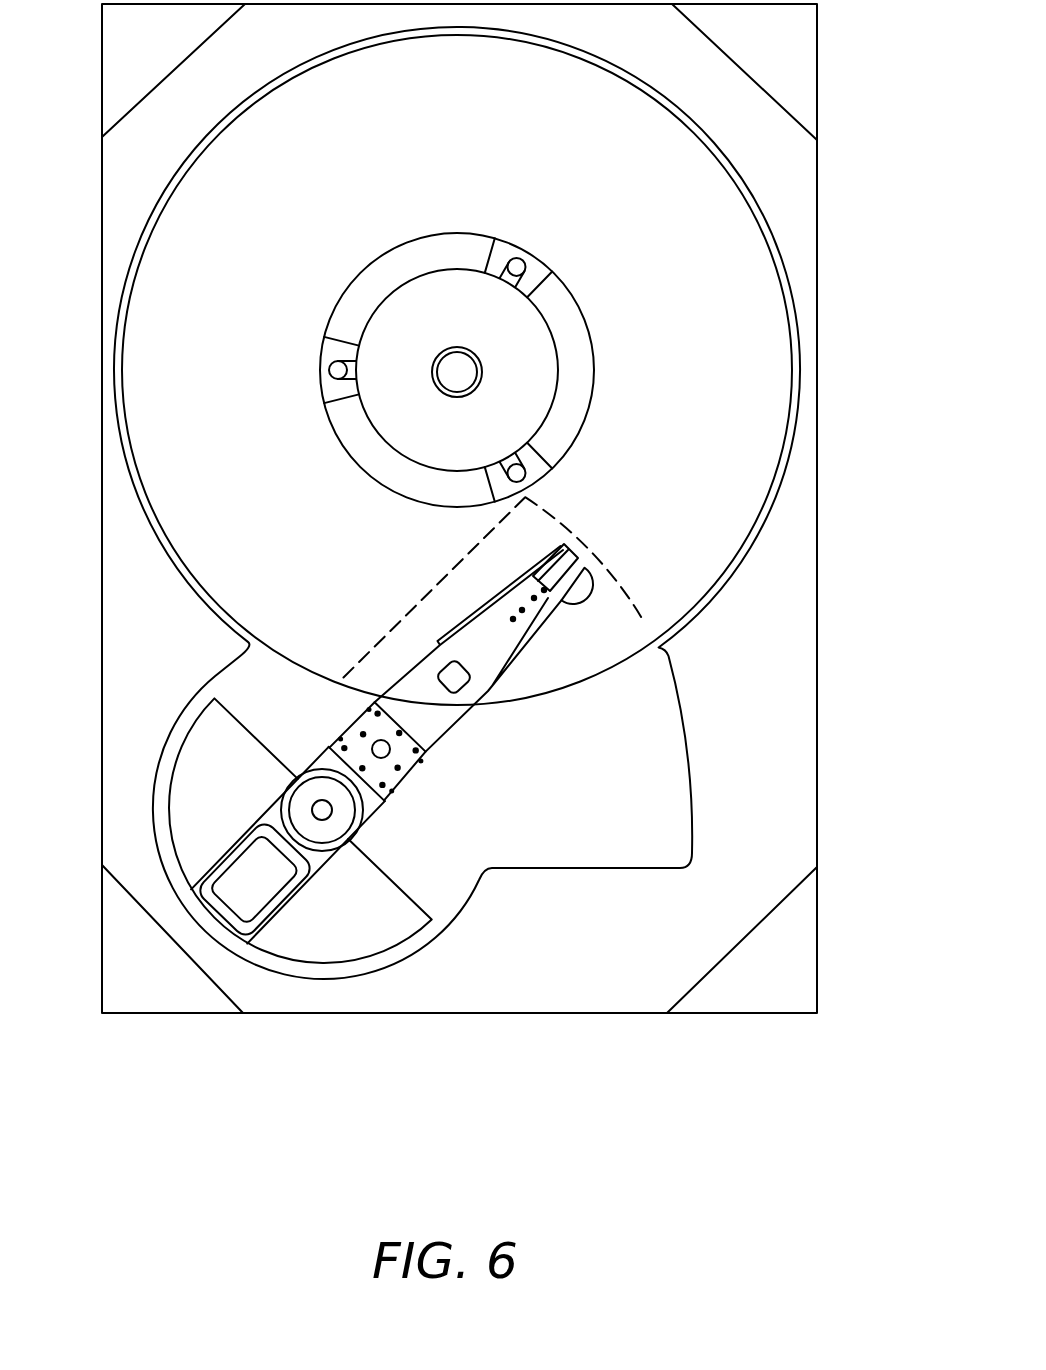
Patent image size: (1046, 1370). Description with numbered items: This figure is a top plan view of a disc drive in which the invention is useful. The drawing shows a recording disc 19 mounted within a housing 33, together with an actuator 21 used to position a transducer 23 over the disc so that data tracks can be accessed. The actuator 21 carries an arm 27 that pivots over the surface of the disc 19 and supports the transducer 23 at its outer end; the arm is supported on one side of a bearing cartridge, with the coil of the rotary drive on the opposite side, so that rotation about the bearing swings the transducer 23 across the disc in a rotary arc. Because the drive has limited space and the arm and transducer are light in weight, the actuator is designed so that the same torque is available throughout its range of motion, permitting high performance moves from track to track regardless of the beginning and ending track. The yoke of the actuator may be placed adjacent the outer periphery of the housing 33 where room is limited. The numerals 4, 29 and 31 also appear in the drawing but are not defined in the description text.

The housing base 4 is at (331, 979).
The recording disc 19 is at (524, 161).
The actuator 21 is at (441, 355).
The transducer 23 is at (583, 542).
The arm 27 is at (421, 680).
The pivot shaft 29 is at (333, 812).
The pivot bearing 31 is at (342, 823).
The housing 33 is at (798, 175).